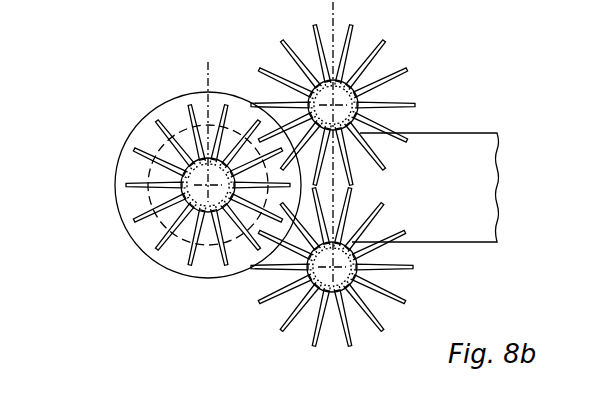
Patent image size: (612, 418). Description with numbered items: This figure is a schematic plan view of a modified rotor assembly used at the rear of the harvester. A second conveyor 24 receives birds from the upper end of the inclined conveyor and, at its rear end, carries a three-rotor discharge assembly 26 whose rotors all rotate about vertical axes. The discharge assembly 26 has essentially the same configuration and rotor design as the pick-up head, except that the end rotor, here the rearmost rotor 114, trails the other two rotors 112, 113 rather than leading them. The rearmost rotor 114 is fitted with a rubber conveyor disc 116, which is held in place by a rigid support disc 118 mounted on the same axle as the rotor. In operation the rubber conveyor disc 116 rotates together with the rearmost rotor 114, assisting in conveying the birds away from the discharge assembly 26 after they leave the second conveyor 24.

The second conveyor 24 is at (464, 141).
The discharge assembly 26 is at (177, 170).
The rotor 112 is at (292, 312).
The rotor 113 is at (379, 58).
The rearmost rotor 114 is at (133, 160).
The rubber conveyor disc 116 is at (140, 242).
The rigid support disc 118 is at (130, 198).